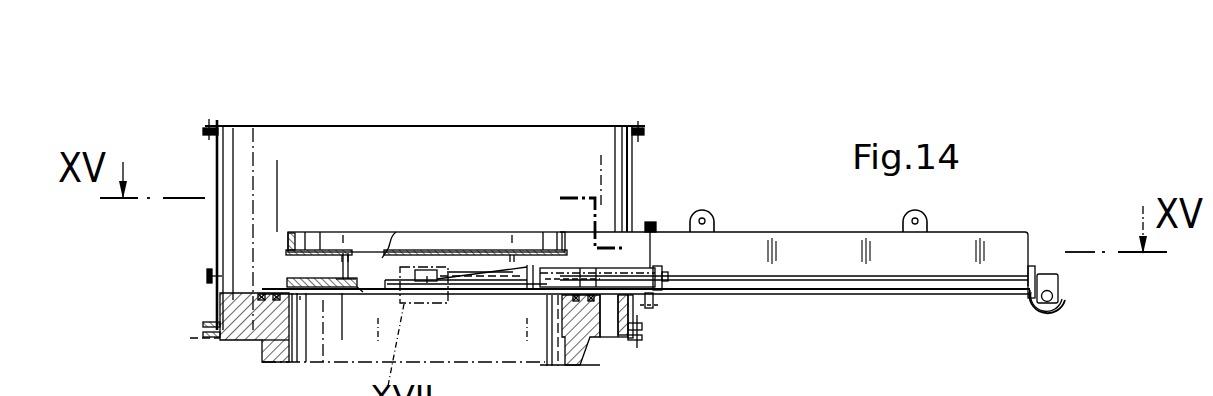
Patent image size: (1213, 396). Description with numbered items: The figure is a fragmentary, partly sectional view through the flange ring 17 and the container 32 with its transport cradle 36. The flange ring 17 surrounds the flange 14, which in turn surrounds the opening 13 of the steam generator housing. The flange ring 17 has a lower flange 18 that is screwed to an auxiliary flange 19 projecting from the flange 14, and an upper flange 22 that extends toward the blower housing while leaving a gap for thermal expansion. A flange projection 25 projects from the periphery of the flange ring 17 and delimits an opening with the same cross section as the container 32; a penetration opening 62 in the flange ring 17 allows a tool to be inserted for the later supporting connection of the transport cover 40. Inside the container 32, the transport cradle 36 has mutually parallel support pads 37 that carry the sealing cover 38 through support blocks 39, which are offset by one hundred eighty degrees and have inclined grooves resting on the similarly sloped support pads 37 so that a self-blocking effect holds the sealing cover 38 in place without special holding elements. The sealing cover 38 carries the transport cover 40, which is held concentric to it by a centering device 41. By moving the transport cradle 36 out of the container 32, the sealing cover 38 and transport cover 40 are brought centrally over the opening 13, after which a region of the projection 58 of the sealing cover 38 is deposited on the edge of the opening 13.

The opening 13 is at (300, 300).
The flange 14 is at (226, 310).
The flange ring 17 is at (216, 215).
The lower flange 18 is at (642, 328).
The auxiliary flange 19 is at (641, 338).
The upper flange 22 is at (647, 133).
The flange projection 25 is at (632, 241).
The container 32 is at (989, 231).
The transport cradle 36 is at (689, 259).
The support pads 37 is at (497, 283).
The sealing cover 38 is at (270, 340).
The support blocks 39 is at (432, 280).
The transport cover 40 is at (288, 237).
The centering device 41 is at (345, 278).
The projection 58 is at (233, 338).
The penetration opening 62 is at (206, 274).